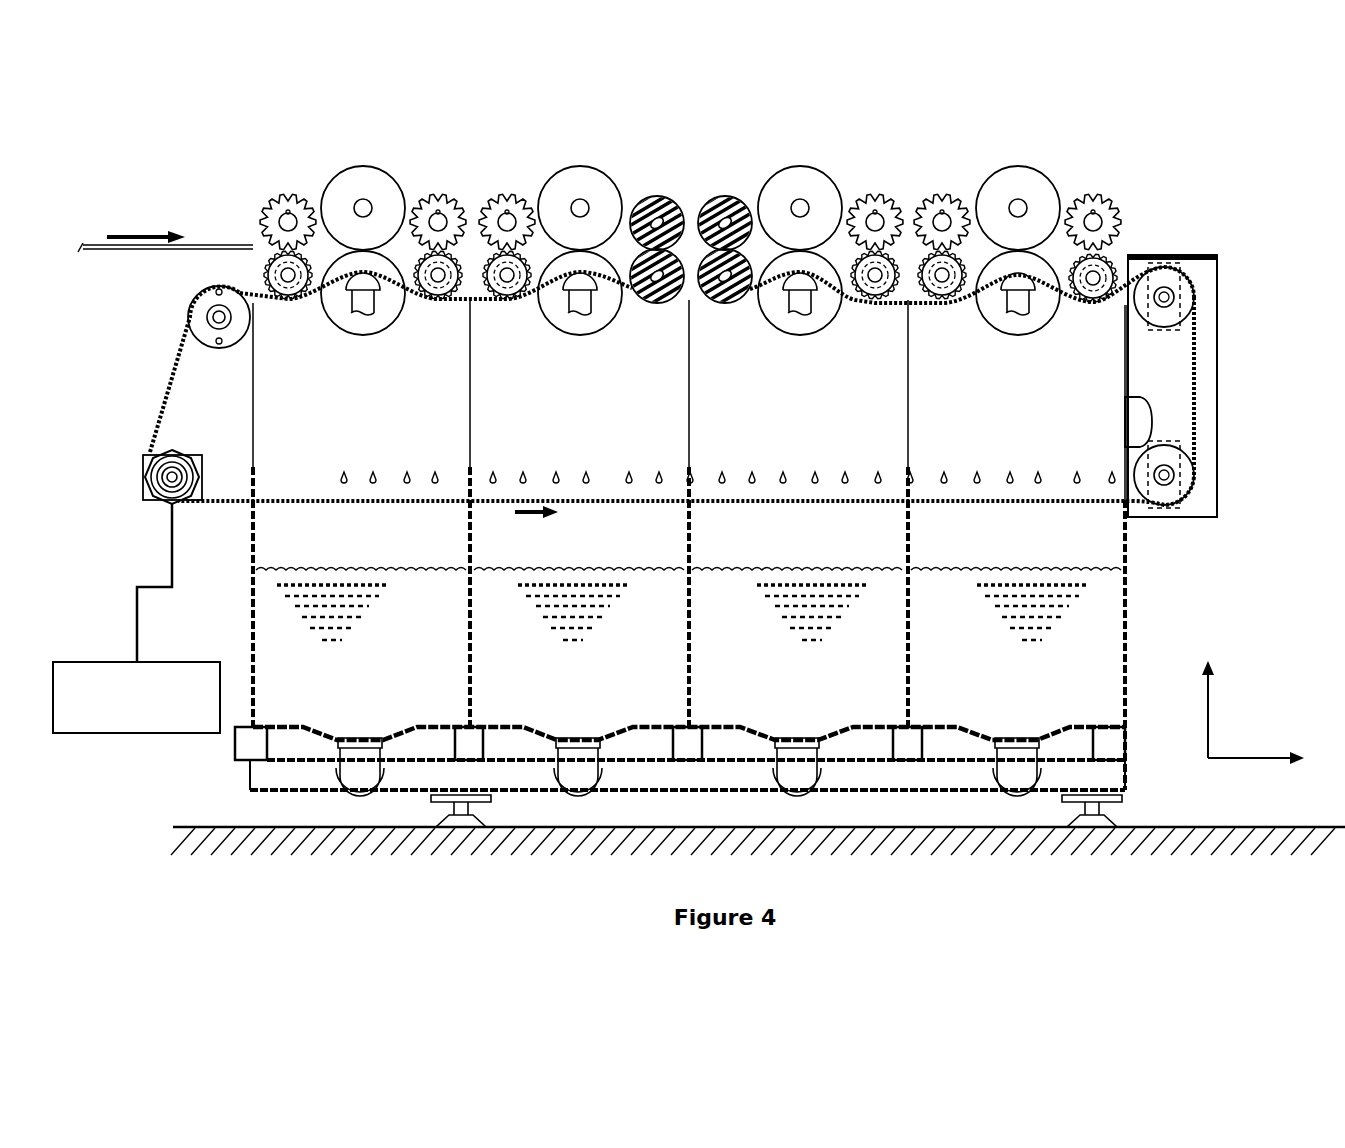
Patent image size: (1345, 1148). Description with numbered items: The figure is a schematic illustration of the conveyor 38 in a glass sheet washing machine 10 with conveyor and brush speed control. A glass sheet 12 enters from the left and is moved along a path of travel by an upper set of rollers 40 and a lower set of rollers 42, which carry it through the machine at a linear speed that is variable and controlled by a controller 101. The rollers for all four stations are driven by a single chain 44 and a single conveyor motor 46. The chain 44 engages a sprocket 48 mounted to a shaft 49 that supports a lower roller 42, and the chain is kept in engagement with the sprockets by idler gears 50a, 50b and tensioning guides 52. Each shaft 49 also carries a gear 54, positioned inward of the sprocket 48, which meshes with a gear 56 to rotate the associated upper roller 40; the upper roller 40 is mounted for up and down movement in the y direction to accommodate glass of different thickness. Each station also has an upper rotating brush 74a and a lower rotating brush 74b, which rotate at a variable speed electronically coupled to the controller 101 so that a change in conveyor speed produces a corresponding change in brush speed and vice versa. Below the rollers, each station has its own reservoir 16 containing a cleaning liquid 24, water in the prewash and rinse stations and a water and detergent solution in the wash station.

The glass sheet washing machine 10 is at (717, 100).
The glass sheet 12 is at (100, 230).
The reservoir 16 is at (1028, 687).
The cleaning liquid 24 is at (277, 623).
The conveyor 38 is at (145, 273).
The upper rollers 40 is at (280, 202).
The lower rollers 42 is at (668, 303).
The chain 44 is at (168, 393).
The conveyor motor 46 is at (157, 477).
The sprocket 48 is at (315, 292).
The shaft 49 is at (284, 303).
The idler gear 50a is at (208, 330).
The idler gear 50b is at (1190, 287).
The tensioning guides 52 is at (393, 300).
The gear 54 is at (324, 203).
The gear 56 is at (436, 194).
The upper rotating brush 74a is at (570, 186).
The lower rotating brush 74b is at (555, 310).
The controller 101 is at (145, 735).